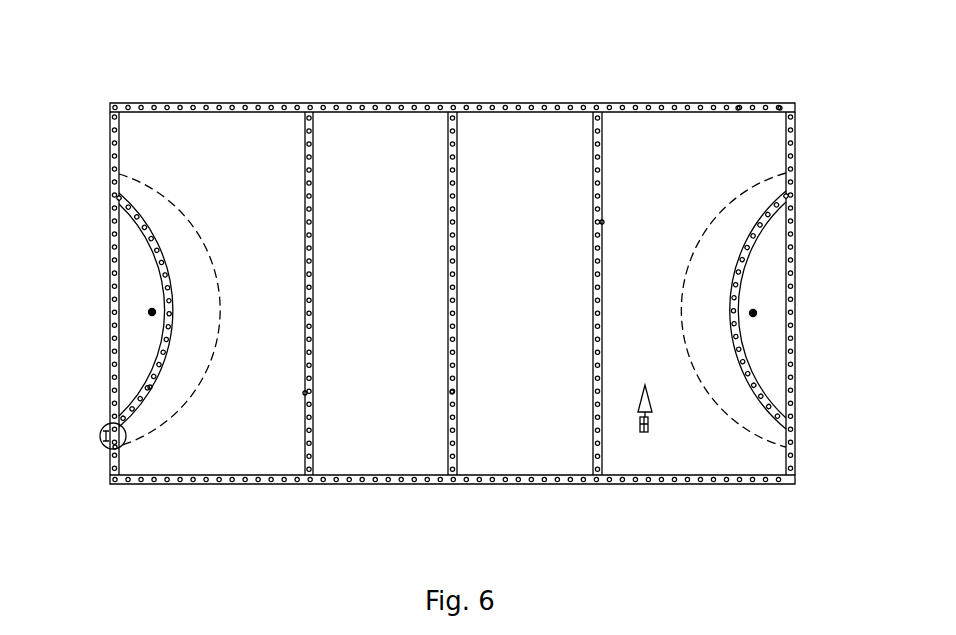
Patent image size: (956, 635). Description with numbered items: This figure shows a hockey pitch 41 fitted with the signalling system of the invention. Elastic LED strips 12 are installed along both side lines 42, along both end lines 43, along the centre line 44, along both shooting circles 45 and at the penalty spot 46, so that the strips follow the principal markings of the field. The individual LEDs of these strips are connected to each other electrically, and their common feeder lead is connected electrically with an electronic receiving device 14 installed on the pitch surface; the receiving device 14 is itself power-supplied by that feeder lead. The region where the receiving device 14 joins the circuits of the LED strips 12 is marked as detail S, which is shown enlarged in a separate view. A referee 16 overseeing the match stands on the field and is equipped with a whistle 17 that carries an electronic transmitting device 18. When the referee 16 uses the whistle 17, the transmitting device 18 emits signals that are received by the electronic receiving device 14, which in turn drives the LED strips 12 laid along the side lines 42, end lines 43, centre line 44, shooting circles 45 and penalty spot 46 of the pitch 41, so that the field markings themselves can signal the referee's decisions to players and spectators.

The elastic LED strips 12 is at (452, 392).
The electronic receiving device 14 is at (105, 442).
The referee 16 is at (644, 388).
The whistle 17 is at (642, 432).
The electronic transmitting device 18 is at (642, 432).
The hockey pitch 41 is at (640, 142).
The side lines 42 is at (614, 104).
The end lines 43 is at (108, 135).
The centre line 44 is at (448, 452).
The shooting circles 45 is at (135, 228).
The penalty spot 46 is at (152, 312).
The detail S is at (107, 428).